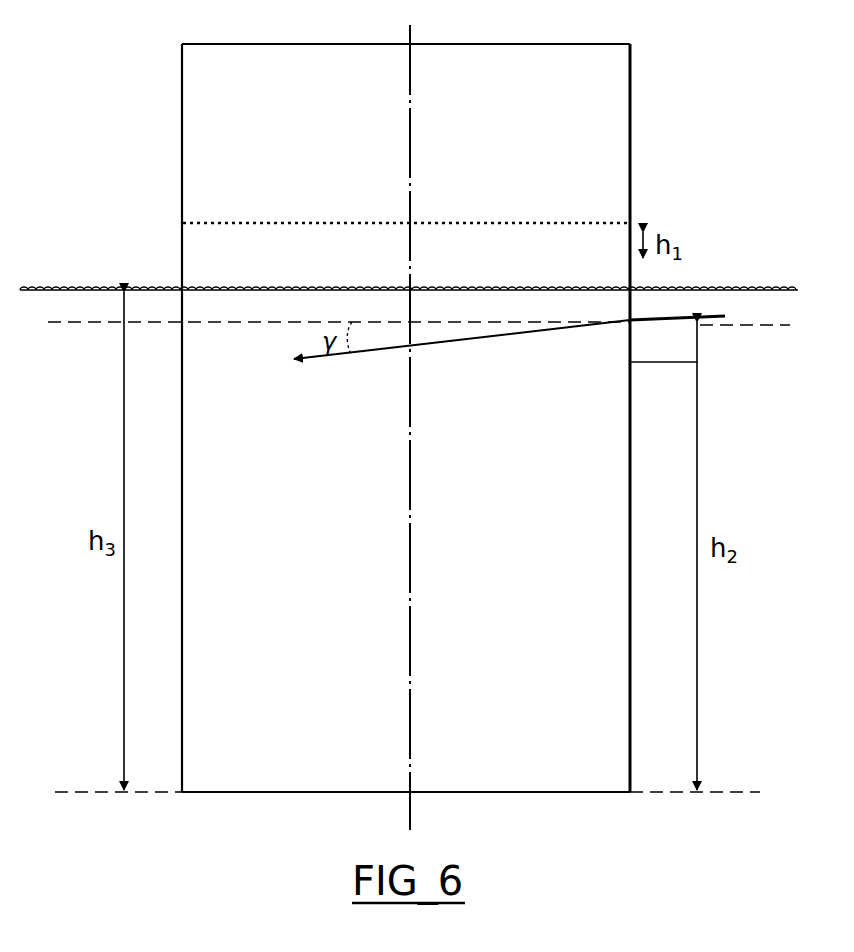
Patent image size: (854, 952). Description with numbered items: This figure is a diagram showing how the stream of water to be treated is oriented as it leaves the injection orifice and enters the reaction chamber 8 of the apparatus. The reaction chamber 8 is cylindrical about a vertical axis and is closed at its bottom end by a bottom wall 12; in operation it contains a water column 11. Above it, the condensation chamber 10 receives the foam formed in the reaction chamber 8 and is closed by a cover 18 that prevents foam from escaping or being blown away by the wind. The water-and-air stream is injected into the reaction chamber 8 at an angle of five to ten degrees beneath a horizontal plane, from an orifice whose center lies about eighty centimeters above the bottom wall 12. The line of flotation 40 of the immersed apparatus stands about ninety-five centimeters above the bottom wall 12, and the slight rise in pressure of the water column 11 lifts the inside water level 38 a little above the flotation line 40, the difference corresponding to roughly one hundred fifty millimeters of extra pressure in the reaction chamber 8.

The reaction chamber 8 is at (630, 425).
The condensation chamber 10 is at (598, 110).
The water column 11 is at (604, 512).
The bottom wall 12 is at (560, 793).
The cover 18 is at (598, 44).
The inside water level 38 is at (595, 223).
The line of flotation 40 is at (730, 290).